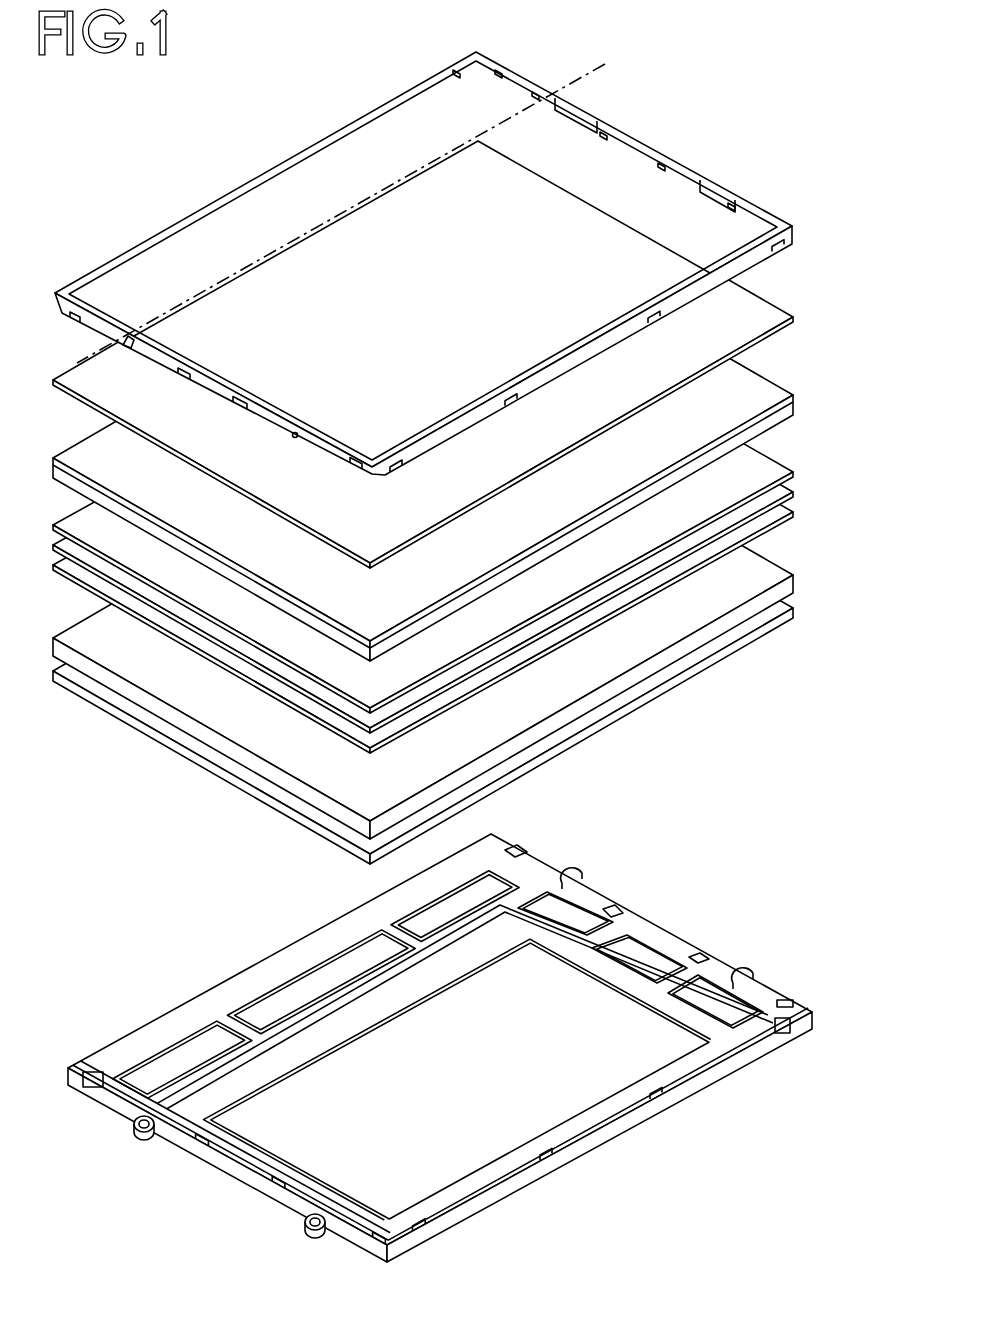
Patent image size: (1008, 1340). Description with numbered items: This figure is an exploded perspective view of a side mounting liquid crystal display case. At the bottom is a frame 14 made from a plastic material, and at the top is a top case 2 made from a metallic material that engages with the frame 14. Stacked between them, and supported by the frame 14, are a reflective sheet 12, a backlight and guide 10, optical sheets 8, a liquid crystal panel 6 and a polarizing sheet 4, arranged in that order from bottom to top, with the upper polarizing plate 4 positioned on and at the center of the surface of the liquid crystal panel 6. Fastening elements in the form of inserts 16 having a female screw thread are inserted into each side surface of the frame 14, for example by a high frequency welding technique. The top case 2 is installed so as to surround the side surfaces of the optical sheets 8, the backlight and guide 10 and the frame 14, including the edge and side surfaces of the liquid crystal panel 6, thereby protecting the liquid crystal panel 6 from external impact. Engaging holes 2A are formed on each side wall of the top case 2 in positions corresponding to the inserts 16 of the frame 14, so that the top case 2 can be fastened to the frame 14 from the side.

The top case 2 is at (770, 220).
The engaging holes 2A is at (128, 341).
The polarizing sheet 4 is at (760, 320).
The liquid crystal panel 6 is at (758, 393).
The optical sheets 8 is at (788, 514).
The backlight and guide 10 is at (795, 580).
The reflective sheet 12 is at (798, 610).
The frame 14 is at (790, 993).
The inserts 16 is at (145, 1134).